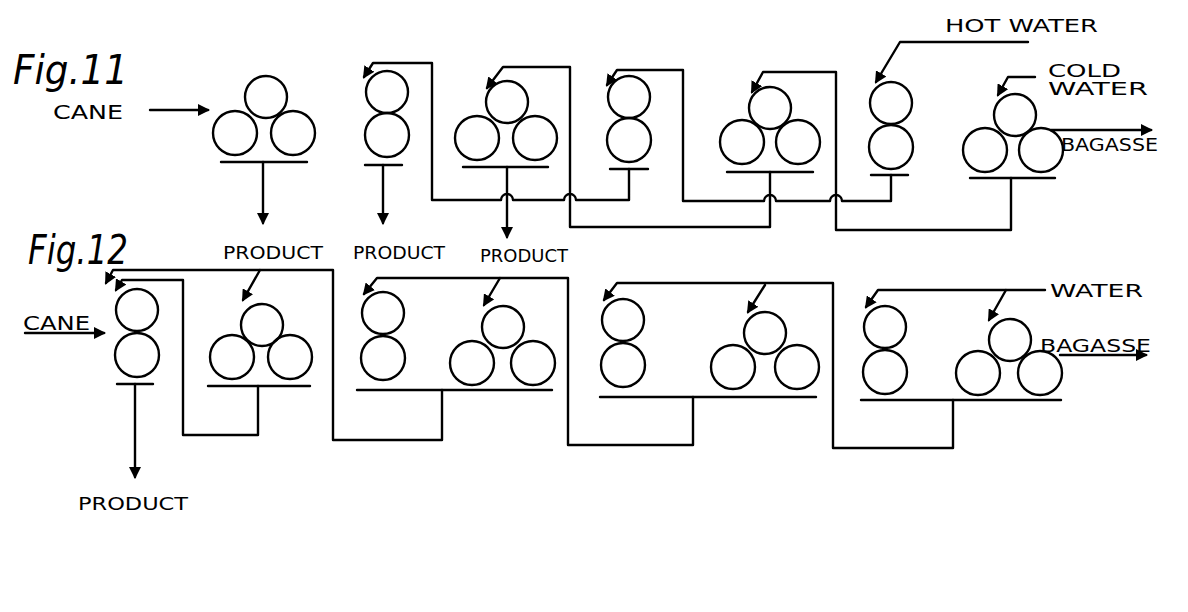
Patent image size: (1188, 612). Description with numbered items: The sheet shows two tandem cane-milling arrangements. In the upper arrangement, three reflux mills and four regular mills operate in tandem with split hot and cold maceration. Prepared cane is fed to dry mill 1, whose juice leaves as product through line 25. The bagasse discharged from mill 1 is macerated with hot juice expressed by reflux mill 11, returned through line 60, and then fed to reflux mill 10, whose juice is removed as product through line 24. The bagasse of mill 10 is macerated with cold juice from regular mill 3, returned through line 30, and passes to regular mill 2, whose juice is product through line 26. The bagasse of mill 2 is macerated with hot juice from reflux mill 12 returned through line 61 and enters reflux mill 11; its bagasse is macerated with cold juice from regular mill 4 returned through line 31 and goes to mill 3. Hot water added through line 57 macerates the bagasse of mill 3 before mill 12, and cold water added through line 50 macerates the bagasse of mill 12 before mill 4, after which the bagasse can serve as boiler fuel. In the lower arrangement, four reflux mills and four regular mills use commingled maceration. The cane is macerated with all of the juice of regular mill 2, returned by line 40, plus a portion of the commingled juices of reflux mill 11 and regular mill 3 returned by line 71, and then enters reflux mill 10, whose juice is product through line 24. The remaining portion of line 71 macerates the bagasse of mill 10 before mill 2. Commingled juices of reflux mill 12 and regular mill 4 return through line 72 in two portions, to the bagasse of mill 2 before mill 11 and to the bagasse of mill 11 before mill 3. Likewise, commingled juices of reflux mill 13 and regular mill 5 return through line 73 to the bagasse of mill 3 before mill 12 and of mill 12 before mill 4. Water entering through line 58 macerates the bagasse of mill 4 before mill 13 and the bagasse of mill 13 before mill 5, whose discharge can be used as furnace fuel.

In FIG. 11, the dry mill 1 is at (260, 109).
In FIG. 11, the regular mill 2 is at (501, 114).
In FIG. 12, the regular mill 2 is at (256, 337).
In FIG. 11, the regular mill 3 is at (764, 120).
In FIG. 12, the regular mill 3 is at (497, 339).
In FIG. 11, the regular mill 4 is at (1009, 127).
In FIG. 12, the regular mill 4 is at (759, 345).
In FIG. 12, the regular mill 5 is at (1004, 352).
In FIG. 11, the reflux mill 10 is at (376, 104).
In FIG. 12, the reflux mill 10 is at (126, 322).
In FIG. 11, the reflux mill 11 is at (619, 109).
In FIG. 12, the reflux mill 11 is at (373, 325).
In FIG. 11, the reflux mill 12 is at (880, 115).
In FIG. 12, the reflux mill 12 is at (612, 332).
In FIG. 12, the reflux mill 13 is at (874, 339).
In FIG. 11, the product line 24 is at (382, 210).
In FIG. 12, the product line 24 is at (134, 437).
In FIG. 11, the product line 25 is at (265, 200).
In FIG. 11, the product line 26 is at (505, 220).
In FIG. 11, the juice return line 30 is at (773, 196).
In FIG. 11, the juice return line 31 is at (1011, 212).
In FIG. 12, the juice return line 40 is at (258, 418).
In FIG. 11, the cold water line 50 is at (1006, 77).
In FIG. 11, the hot water line 57 is at (902, 24).
In FIG. 12, the water line 58 is at (988, 289).
In FIG. 11, the reflux juice return line 60 is at (633, 187).
In FIG. 11, the reflux juice return line 61 is at (891, 191).
In FIG. 12, the commingled juice return line 71 is at (442, 423).
In FIG. 12, the commingled juice return line 72 is at (693, 428).
In FIG. 12, the commingled juice return line 73 is at (953, 433).